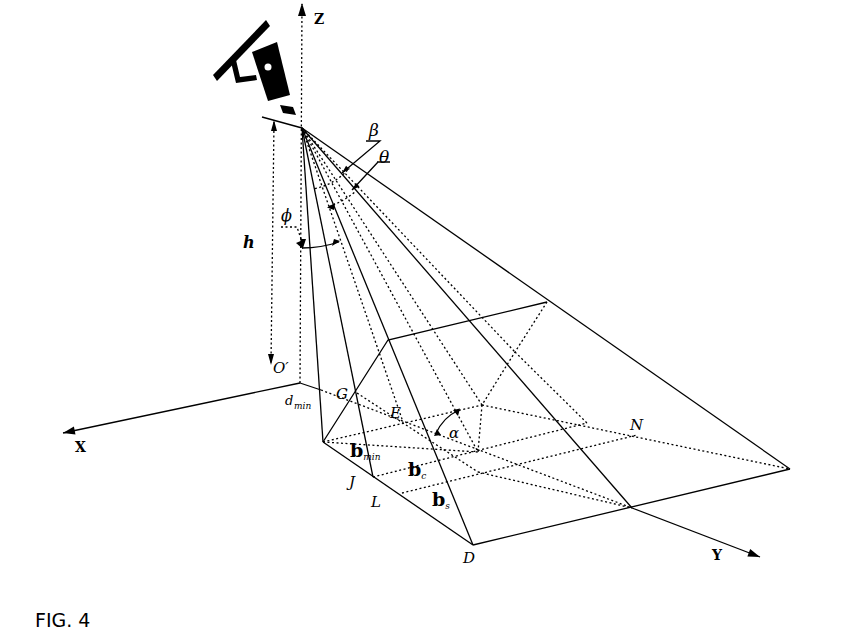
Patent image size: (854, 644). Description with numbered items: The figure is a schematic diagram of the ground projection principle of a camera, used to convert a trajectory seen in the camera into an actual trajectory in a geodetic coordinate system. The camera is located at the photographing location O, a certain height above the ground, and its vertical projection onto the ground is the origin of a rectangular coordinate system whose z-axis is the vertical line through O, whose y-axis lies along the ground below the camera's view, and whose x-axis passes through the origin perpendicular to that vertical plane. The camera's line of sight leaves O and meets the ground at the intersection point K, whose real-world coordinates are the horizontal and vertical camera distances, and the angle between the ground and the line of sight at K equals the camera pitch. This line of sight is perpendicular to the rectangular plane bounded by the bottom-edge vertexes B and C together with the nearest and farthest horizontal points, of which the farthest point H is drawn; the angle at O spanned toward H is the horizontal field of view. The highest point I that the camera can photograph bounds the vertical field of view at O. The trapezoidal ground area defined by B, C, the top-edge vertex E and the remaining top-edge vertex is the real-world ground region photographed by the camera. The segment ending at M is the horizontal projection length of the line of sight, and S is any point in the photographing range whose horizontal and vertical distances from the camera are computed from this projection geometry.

The photographing location of the camera O is at (467, 329).
The vertex of a top edge of an image E is at (550, 336).
The vertex of a bottom edge of an image B is at (420, 423).
The highest point photographable in the vertical field of view I is at (619, 514).
The vertex of a bottom edge of an image C is at (402, 428).
The intersection point of the line of sight and the ground K is at (455, 450).
The any point in the photographing range S is at (497, 445).
The endpoint of the horizontal projection of the line of sight M is at (636, 410).
The farthest point photographable in the horizontal field of view H is at (514, 353).